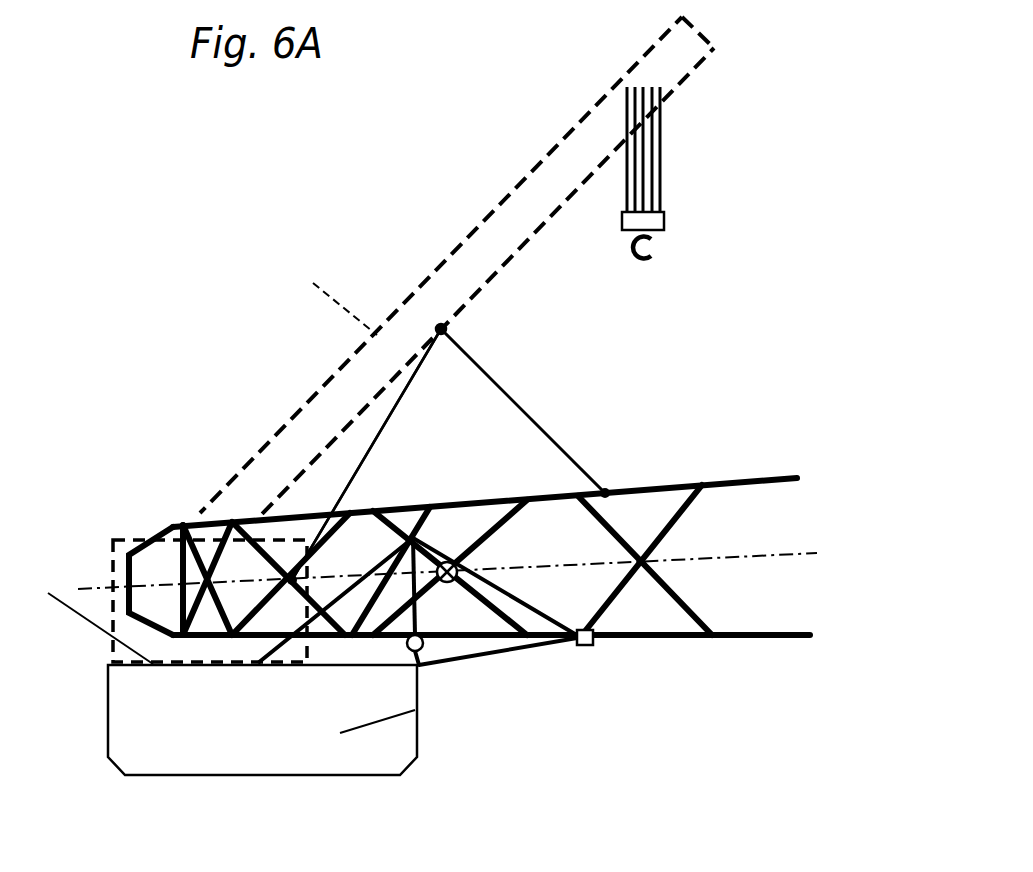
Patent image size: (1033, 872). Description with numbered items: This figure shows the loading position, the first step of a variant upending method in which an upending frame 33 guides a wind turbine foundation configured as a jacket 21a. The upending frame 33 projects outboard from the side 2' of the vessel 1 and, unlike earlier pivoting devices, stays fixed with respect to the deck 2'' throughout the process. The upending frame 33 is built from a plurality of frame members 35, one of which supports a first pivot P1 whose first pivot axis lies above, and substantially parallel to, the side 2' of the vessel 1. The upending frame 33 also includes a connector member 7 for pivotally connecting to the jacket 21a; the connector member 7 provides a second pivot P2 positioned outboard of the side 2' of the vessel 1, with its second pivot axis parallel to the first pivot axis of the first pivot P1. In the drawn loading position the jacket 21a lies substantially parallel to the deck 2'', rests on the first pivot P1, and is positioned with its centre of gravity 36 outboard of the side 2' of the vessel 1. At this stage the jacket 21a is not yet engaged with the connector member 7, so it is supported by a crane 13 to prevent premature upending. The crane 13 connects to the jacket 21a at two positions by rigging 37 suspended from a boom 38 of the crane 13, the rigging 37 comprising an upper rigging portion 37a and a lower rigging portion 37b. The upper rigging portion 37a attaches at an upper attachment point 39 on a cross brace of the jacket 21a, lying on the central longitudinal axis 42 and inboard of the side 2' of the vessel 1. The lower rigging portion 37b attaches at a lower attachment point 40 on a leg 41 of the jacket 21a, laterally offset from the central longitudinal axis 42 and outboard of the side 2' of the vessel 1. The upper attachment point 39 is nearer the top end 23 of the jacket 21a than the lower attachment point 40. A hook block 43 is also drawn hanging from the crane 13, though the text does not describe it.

The vessel 1 is at (93, 695).
The side of the vessel 2' is at (366, 731).
The deck 2'' is at (86, 621).
The connector member 7 is at (597, 648).
The crane 13 is at (407, 218).
The jacket 21a is at (742, 637).
The top end of the jacket 23 is at (118, 513).
The upending frame 33 is at (472, 675).
The frame members 35 is at (535, 643).
The centre of gravity 36 is at (447, 562).
The rigging 37 is at (537, 404).
The upper rigging portion 37a is at (373, 443).
The lower rigging portion 37b is at (488, 372).
The boom 38 is at (332, 303).
The upper attachment point 39 is at (288, 583).
The lower attachment point 40 is at (605, 488).
The leg 41 is at (653, 483).
The central longitudinal axis 42 is at (795, 554).
The hook block 43 is at (656, 246).
The first pivot P1 is at (418, 652).
The second pivot P2 is at (585, 647).